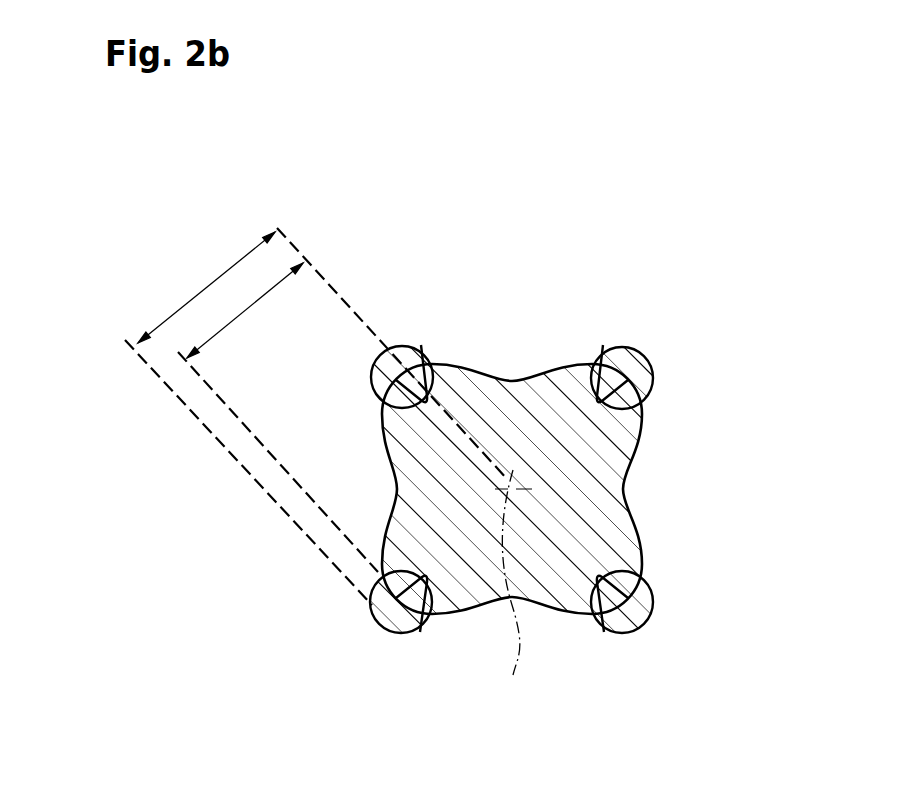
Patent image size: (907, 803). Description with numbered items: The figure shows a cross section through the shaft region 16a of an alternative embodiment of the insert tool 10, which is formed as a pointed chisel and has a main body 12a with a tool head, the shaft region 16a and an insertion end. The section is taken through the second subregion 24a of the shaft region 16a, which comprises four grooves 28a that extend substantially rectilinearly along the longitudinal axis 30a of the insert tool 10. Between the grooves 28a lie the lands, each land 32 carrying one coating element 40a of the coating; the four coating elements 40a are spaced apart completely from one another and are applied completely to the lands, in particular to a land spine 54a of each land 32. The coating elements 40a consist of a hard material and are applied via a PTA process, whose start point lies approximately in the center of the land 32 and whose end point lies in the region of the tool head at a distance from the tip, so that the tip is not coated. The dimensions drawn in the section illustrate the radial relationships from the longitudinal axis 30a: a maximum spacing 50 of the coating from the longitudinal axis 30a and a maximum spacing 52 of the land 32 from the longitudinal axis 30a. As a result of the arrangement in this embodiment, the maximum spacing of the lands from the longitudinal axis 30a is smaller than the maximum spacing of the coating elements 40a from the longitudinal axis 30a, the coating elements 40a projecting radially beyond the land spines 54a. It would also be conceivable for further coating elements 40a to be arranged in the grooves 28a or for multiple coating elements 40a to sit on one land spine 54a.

The insert tool 10 is at (724, 171).
The main body 12a is at (629, 556).
The shaft region 16a is at (650, 481).
The second subregion 24a is at (503, 456).
The groove 28a is at (513, 378).
The longitudinal axis 30a is at (510, 591).
The land 32 is at (585, 383).
The coating element 40a is at (374, 368).
The maximum spacing of the coating from the longitudinal axis 50 is at (201, 291).
The maximum spacing of the land from the longitudinal axis 52 is at (246, 308).
The land spine 54a is at (421, 345).